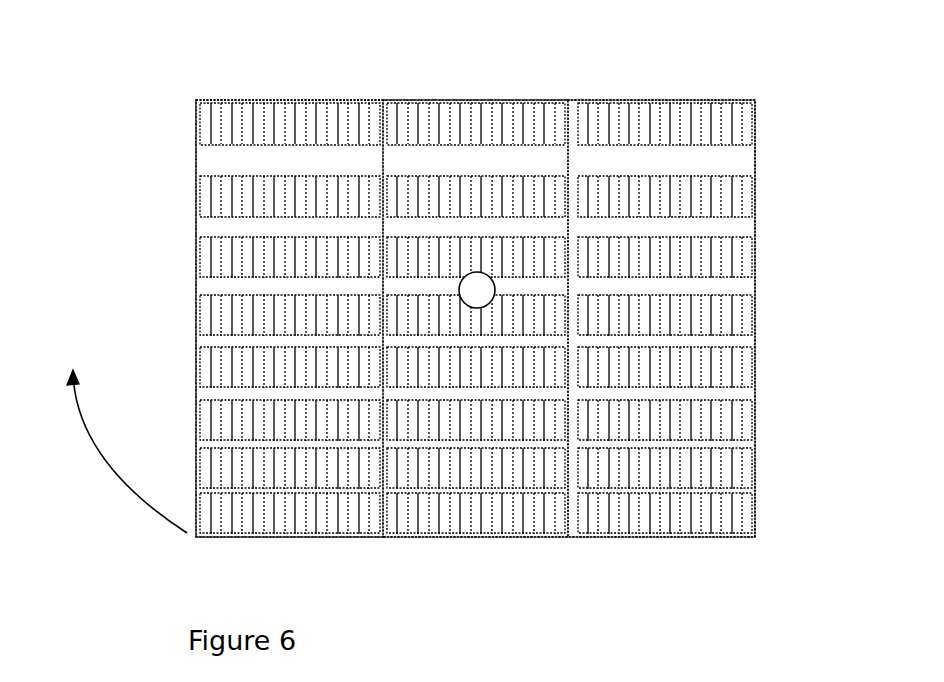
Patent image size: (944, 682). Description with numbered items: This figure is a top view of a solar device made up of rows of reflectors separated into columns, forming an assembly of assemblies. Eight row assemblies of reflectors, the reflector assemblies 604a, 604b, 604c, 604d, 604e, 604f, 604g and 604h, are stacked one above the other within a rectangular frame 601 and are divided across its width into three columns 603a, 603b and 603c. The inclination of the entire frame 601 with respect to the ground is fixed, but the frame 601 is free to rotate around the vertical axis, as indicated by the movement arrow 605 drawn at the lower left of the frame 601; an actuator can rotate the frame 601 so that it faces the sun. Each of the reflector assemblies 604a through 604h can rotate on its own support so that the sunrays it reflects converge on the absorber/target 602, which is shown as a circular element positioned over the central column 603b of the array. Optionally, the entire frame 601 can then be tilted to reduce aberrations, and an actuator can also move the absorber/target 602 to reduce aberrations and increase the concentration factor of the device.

The frame 601 is at (196, 276).
The absorber/target 602 is at (459, 287).
The column 603a is at (289, 100).
The column 603b is at (471, 100).
The column 603c is at (655, 100).
The reflector assembly 604a is at (753, 147).
The reflector assembly 604b is at (753, 198).
The reflector assembly 604c is at (753, 258).
The reflector assembly 604d is at (753, 320).
The reflector assembly 604e is at (753, 382).
The reflector assembly 604f is at (753, 428).
The reflector assembly 604g is at (753, 478).
The reflector assembly 604h is at (753, 527).
The movement arrow 605 is at (103, 457).